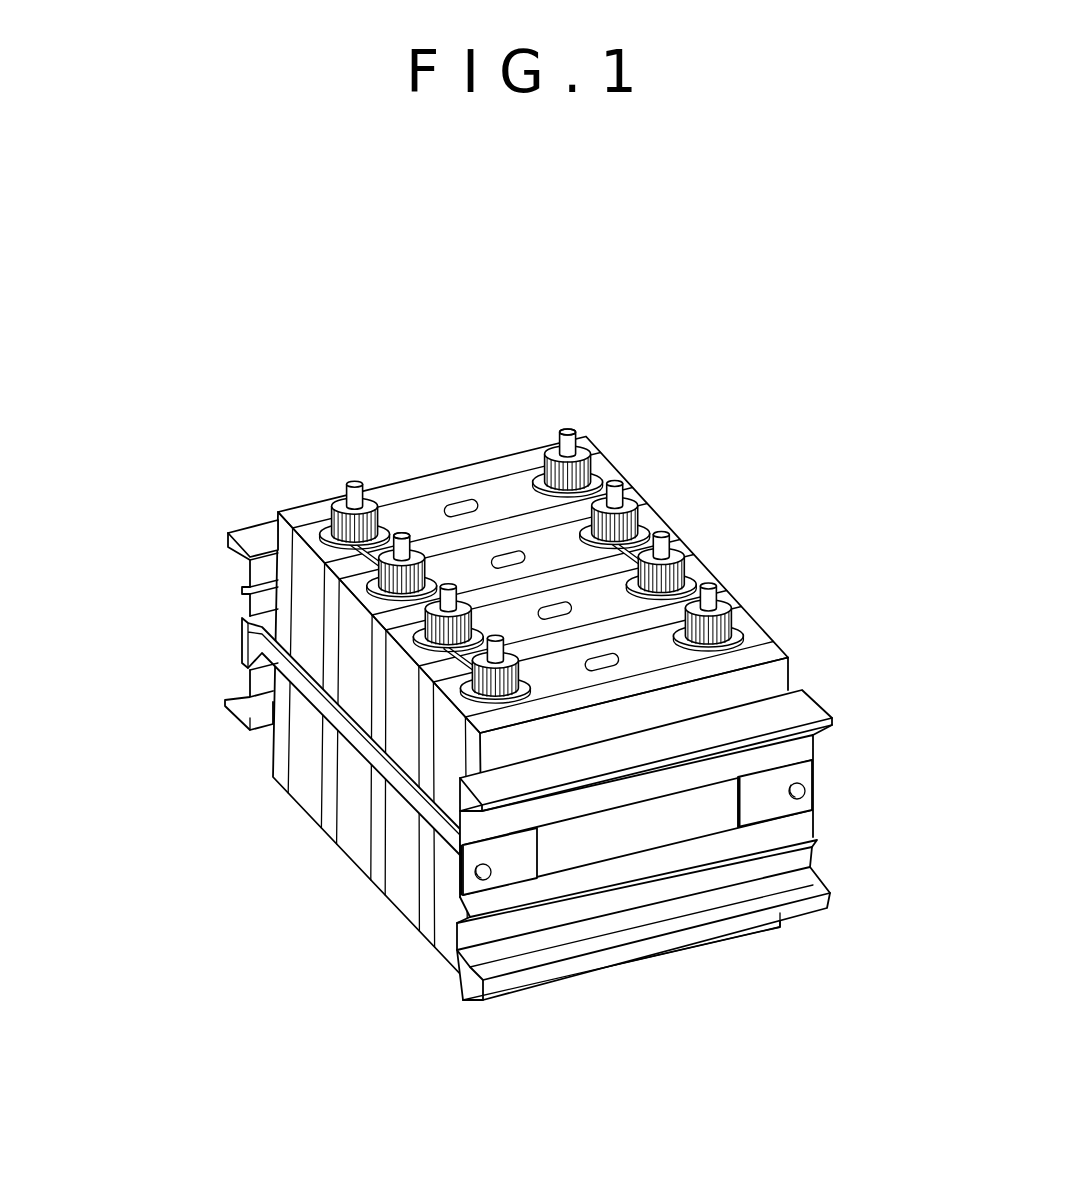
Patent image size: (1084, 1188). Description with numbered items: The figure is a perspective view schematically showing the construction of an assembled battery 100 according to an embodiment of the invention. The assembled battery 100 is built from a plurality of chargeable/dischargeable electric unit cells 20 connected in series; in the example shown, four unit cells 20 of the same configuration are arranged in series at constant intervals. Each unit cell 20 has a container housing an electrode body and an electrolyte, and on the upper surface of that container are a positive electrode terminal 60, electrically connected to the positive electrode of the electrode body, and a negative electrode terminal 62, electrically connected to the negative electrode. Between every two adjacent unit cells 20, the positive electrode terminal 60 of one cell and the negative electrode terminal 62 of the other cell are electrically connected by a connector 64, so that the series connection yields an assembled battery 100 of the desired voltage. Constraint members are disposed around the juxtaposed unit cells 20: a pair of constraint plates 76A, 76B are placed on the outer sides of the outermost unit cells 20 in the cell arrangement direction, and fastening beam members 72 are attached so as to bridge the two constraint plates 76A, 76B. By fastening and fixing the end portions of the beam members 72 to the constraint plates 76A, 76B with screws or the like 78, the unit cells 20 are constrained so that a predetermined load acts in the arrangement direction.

The assembled battery 100 is at (618, 344).
The unit cell 20 is at (707, 563).
The positive electrode terminal 60 is at (355, 484).
The negative electrode terminal 62 is at (566, 430).
The connector 64 is at (383, 546).
The fastening beam member 72 is at (420, 820).
The constraint plate 76A is at (704, 905).
The constraint plate 76B is at (250, 528).
The screw 78 is at (807, 793).